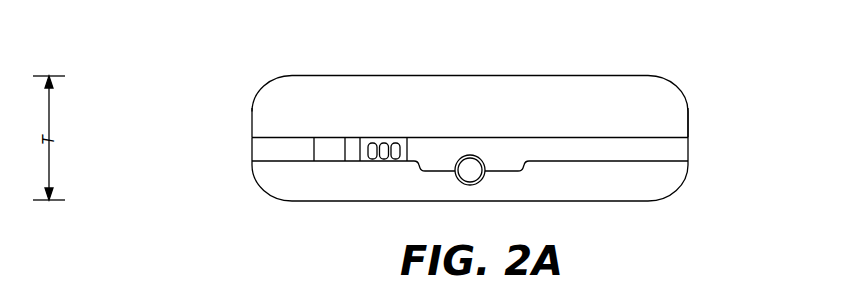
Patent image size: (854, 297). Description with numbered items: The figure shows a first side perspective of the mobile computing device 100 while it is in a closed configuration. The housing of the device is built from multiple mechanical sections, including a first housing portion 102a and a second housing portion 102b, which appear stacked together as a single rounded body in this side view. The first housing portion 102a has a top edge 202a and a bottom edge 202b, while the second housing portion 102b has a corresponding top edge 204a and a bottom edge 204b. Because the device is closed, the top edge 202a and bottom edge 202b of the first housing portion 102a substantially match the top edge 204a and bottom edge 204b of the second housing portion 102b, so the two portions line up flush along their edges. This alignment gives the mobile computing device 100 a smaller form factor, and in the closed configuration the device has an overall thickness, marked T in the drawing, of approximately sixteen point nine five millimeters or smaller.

The mobile computing device 100 is at (471, 128).
The first housing portion 102a is at (315, 75).
The second housing portion 102b is at (625, 201).
The top edge 202a is at (252, 122).
The bottom edge 202b is at (688, 122).
The top edge 204a is at (252, 155).
The bottom edge 204b is at (688, 155).